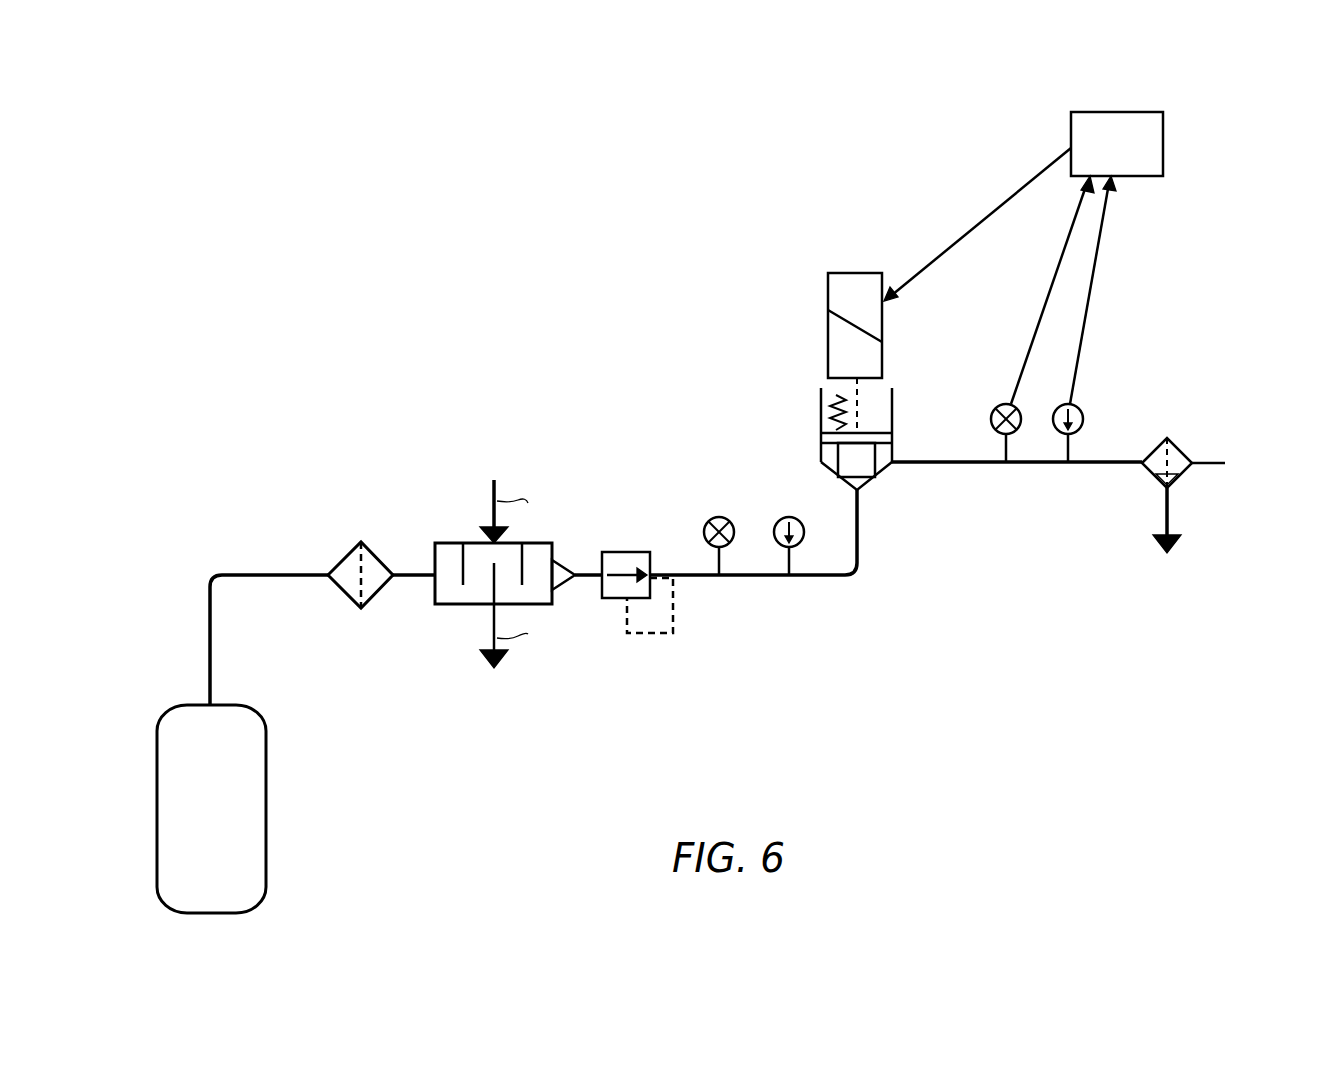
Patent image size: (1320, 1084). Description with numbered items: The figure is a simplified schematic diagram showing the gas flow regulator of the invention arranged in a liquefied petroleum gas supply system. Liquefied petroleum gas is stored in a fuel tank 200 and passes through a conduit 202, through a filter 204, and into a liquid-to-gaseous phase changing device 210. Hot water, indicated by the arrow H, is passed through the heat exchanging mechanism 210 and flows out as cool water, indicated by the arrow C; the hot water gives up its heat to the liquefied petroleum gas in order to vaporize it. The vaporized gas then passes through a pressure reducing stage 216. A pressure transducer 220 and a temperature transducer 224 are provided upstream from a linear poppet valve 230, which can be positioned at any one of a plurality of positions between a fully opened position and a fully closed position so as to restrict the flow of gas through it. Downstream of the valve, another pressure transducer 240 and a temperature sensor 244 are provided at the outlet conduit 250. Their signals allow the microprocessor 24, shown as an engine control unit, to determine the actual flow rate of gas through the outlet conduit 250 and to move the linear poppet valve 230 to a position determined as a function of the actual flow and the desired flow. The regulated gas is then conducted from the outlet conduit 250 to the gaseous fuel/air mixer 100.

The microprocessor 24 is at (1115, 112).
The gaseous fuel/air mixer 100 is at (1147, 474).
The fuel tank 200 is at (257, 797).
The conduit 202 is at (268, 580).
The filter 204 is at (347, 562).
The liquid-to-gaseous phase changing device 210 is at (452, 607).
The pressure reducing stage 216 is at (600, 596).
The pressure transducer 220 is at (716, 560).
The temperature transducer 224 is at (786, 562).
The linear poppet valve 230 is at (882, 352).
The pressure transducer 240 is at (1003, 450).
The temperature sensor 244 is at (1071, 450).
The outlet conduit 250 is at (923, 468).